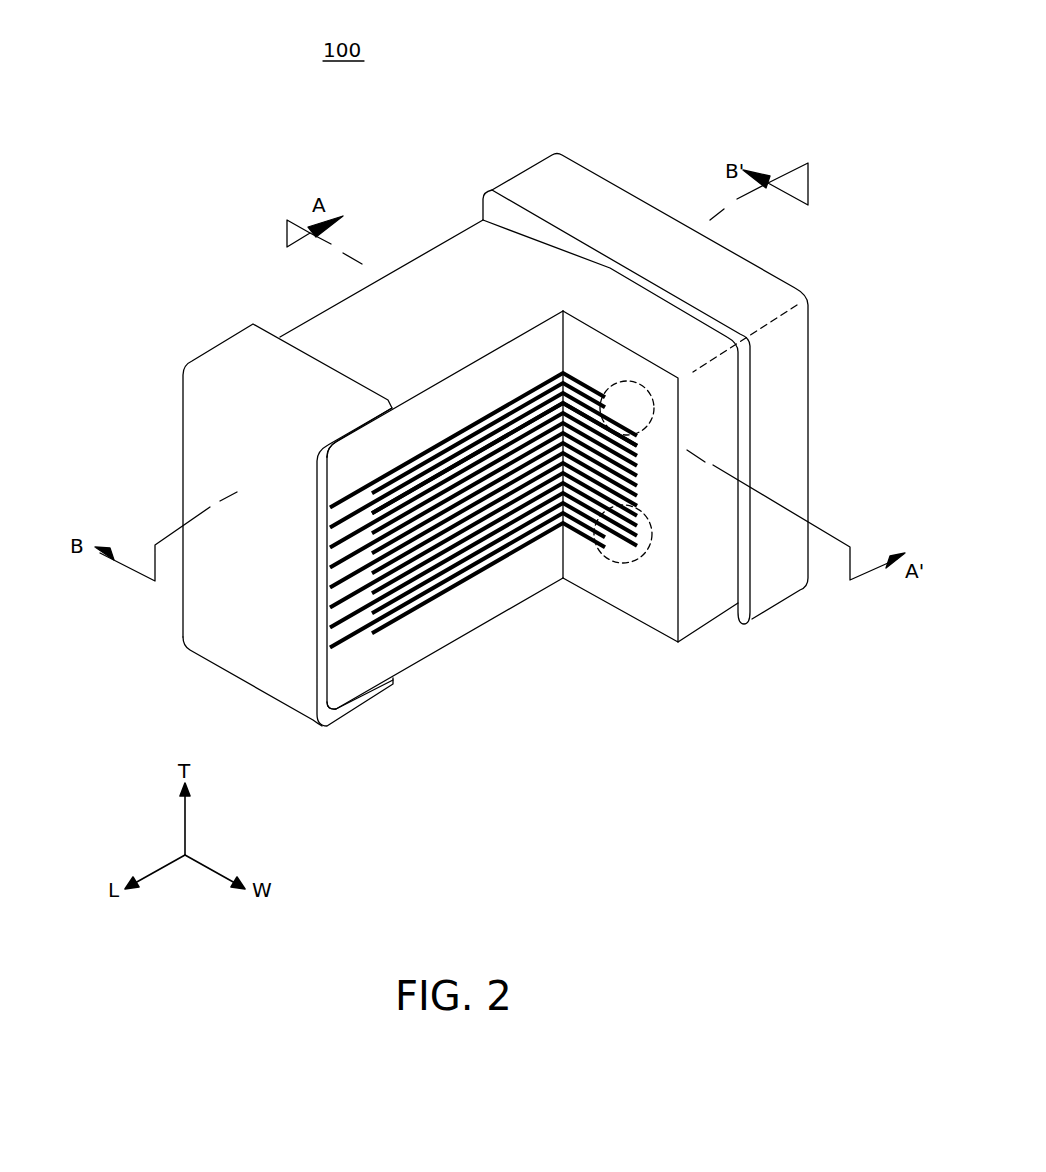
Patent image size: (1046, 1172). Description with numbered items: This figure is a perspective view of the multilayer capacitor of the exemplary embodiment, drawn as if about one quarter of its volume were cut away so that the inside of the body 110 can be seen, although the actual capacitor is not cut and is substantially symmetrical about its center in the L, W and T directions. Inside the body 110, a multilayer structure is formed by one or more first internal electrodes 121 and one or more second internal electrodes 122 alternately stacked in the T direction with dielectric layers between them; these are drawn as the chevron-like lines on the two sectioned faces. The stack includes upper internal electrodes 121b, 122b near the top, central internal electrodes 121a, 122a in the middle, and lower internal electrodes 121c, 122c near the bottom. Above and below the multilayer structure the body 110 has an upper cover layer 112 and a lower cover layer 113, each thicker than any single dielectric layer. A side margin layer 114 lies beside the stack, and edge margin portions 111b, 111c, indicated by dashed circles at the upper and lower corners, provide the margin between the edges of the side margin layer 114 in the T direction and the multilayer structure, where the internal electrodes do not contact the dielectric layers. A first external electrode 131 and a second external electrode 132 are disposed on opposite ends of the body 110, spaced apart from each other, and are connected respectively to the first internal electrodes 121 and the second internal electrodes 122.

The body 110 is at (530, 255).
The upper cover layer 112 is at (464, 397).
The lower cover layer 113 is at (458, 618).
The side margin layer 114 is at (662, 573).
The edge margin portion 111b is at (655, 401).
The edge margin portion 111c is at (610, 566).
The first internal electrode 121 is at (483, 480).
The second internal electrode 122 is at (504, 458).
The central internal electrode 121a is at (370, 568).
The upper internal electrode 121b is at (350, 500).
The lower internal electrode 121c is at (347, 634).
The central internal electrode 122a is at (385, 586).
The upper internal electrode 122b is at (375, 480).
The lower internal electrode 122c is at (395, 614).
The first external electrode 131 is at (242, 368).
The second external electrode 132 is at (592, 193).